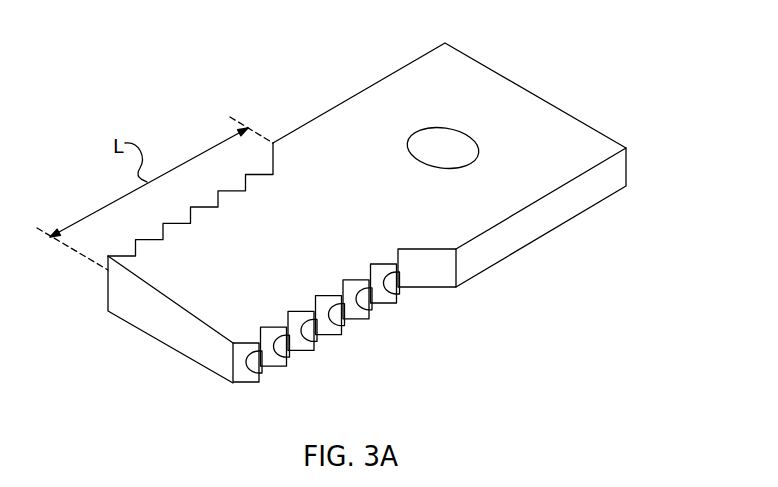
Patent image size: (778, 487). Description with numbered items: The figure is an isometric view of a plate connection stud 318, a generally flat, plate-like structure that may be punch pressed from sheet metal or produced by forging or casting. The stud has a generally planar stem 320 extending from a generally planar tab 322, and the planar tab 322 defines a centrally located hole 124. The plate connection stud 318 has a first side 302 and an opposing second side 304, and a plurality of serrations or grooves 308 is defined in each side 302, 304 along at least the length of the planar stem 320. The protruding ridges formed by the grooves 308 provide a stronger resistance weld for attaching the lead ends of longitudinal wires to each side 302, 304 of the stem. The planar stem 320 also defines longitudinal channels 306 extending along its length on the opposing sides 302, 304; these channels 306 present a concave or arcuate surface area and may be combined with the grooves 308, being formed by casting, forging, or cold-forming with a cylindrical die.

The plate connection stud 318 is at (135, 76).
The first side 302 is at (340, 100).
The planar tab 322 is at (562, 173).
The second side 304 is at (503, 243).
The hole 124 is at (458, 146).
The planar stem 320 is at (192, 300).
The grooves 308 is at (343, 305).
The longitudinal channels 306 is at (275, 245).